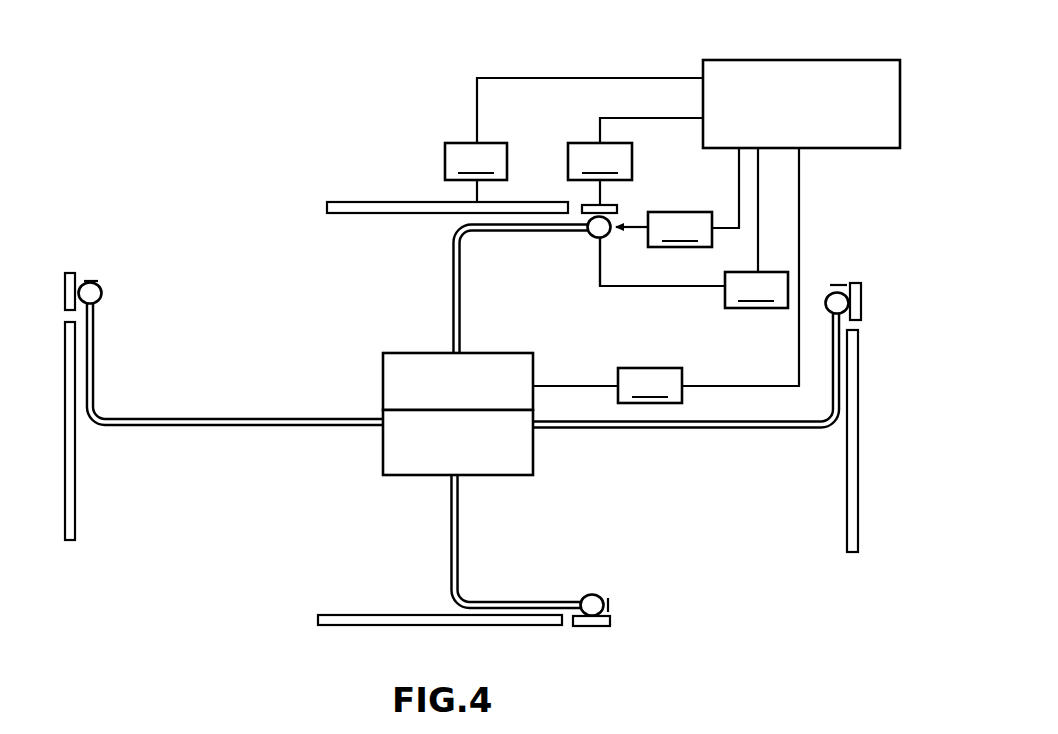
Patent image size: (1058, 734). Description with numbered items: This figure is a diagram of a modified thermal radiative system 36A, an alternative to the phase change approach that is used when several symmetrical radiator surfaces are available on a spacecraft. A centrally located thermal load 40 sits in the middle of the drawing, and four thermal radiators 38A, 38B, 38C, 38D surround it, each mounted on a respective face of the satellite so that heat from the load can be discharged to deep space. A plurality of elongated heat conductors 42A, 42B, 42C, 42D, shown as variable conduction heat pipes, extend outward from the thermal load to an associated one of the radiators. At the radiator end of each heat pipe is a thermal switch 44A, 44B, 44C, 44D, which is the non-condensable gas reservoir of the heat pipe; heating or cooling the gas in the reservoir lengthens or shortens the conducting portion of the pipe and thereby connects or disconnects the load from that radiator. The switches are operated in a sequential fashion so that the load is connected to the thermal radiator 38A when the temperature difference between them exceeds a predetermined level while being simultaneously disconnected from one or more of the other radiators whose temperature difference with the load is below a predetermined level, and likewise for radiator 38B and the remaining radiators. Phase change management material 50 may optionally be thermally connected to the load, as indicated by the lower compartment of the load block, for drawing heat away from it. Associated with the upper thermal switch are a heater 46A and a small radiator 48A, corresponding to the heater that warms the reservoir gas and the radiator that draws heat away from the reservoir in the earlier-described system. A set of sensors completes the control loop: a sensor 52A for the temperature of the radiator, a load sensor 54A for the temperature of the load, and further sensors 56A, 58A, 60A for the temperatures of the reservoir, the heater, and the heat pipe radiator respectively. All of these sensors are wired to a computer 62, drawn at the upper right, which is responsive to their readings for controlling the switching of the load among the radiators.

The modified thermal radiative system 36A is at (309, 74).
The thermal radiator 38A is at (370, 202).
The thermal radiator 38B is at (859, 486).
The thermal radiator 38C is at (350, 629).
The thermal radiator 38D is at (77, 490).
The thermal load 40 is at (420, 353).
The elongated heat conductor 42A is at (497, 236).
The elongated heat conductor 42B is at (658, 432).
The elongated heat conductor 42C is at (466, 563).
The elongated heat conductor 42D is at (260, 430).
The thermal switch 44A is at (588, 238).
The thermal switch 44B is at (824, 310).
The thermal switch 44C is at (597, 593).
The thermal switch 44D is at (106, 294).
The valve actuator 46A is at (611, 235).
The position sensor 48A is at (620, 211).
The phase change management material 50 is at (417, 475).
The sensor module 52A is at (476, 161).
The sensor module 54A is at (650, 385).
The sensor module 56A is at (756, 290).
The sensor module 58A is at (664, 229).
The sensor module 60A is at (600, 161).
The computer 62 is at (795, 60).